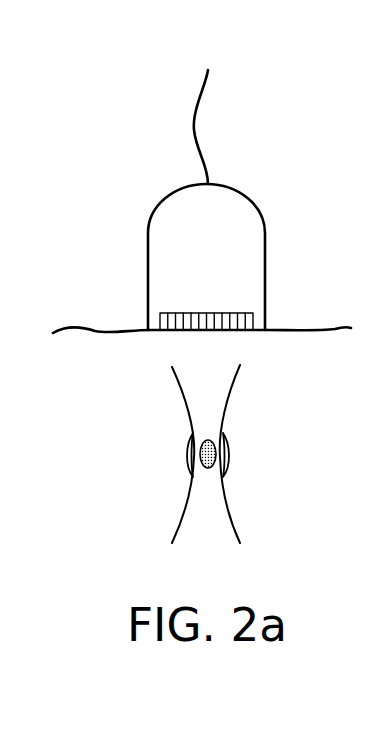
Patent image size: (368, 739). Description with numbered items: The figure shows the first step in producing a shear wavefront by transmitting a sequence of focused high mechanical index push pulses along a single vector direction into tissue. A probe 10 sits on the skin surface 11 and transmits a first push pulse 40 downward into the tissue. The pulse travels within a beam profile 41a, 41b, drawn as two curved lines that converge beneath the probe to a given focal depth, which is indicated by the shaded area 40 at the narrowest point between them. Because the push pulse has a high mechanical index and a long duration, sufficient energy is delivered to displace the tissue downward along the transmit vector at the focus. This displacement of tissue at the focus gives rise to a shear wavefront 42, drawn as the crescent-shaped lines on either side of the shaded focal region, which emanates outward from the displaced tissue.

The probe 10 is at (258, 260).
The skin surface 11 is at (87, 326).
The beam profile 41a is at (186, 400).
The beam profile 41b is at (230, 398).
The shear wavefront 42 is at (184, 458).
The first push pulse 40 is at (208, 469).